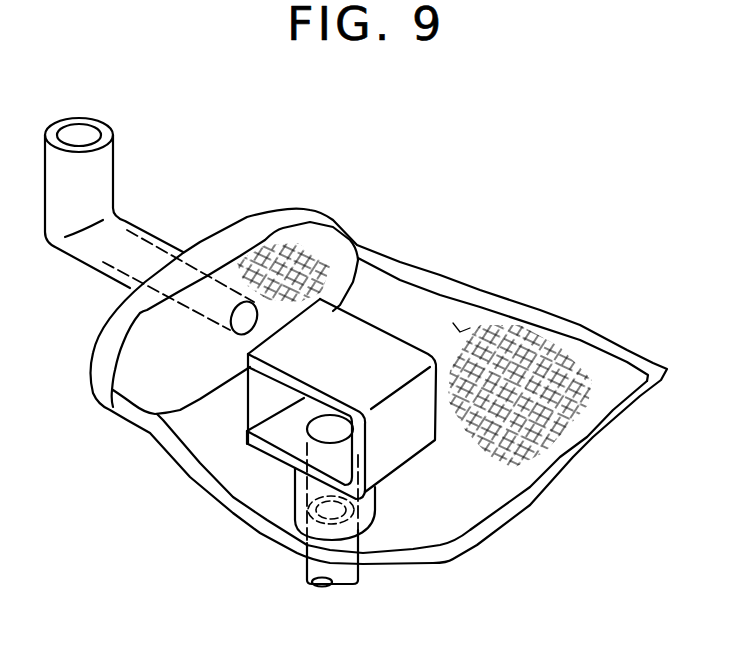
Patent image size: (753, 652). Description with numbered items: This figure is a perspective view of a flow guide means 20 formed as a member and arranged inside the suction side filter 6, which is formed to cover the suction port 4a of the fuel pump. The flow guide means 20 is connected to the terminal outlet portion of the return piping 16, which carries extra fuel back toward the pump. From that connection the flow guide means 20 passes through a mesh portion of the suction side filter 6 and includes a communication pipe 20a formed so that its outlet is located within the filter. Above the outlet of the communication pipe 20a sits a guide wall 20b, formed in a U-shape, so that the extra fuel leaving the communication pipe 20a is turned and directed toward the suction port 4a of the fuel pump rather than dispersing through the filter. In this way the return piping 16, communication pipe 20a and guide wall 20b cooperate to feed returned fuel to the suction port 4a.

The suction port 4a is at (133, 225).
The suction side filter 6 is at (477, 317).
The return piping 16 is at (307, 570).
The flow guide means 20 is at (338, 388).
The communication pipe 20a is at (292, 493).
The guide wall 20b is at (351, 340).